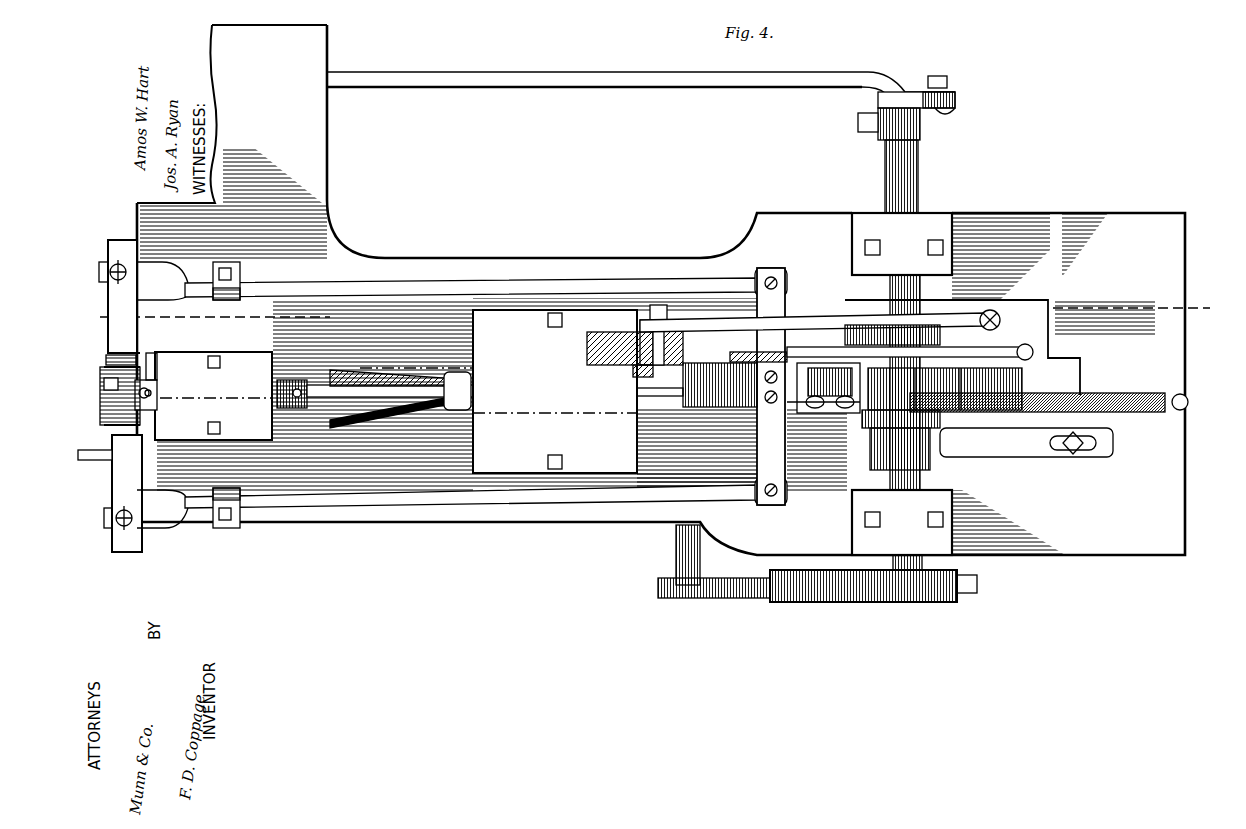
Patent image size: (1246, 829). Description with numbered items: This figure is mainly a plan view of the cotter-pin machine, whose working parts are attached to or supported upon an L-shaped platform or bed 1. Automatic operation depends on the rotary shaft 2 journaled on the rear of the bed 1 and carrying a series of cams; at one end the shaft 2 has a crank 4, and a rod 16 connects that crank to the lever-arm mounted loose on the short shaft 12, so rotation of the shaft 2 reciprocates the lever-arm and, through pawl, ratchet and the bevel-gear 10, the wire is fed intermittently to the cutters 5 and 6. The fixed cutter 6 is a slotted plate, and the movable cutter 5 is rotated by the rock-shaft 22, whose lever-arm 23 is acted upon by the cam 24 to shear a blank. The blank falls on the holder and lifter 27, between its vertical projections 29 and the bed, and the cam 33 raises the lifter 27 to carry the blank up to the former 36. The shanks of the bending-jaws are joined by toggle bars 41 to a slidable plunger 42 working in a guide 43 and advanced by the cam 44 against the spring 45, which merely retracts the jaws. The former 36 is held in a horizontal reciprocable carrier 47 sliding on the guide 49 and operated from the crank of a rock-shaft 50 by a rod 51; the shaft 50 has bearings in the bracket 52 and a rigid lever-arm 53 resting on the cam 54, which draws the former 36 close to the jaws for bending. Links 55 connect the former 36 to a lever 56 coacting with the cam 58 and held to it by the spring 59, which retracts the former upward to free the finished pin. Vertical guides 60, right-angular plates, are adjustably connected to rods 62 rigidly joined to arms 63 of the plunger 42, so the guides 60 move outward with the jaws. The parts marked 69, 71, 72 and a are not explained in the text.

The platform or bed 1 is at (655, 291).
The rotary shaft 2 is at (925, 565).
The crank 4 is at (958, 97).
The movable cutter 5 is at (110, 354).
The fixed cutter 6 is at (104, 358).
The bevel-gear 10 is at (651, 305).
The short shaft 12 is at (925, 185).
The rod 16 is at (572, 82).
The rock-shaft 22 is at (676, 548).
The lever-arm 23 is at (745, 598).
The cam 24 is at (850, 602).
The holder and lifter 27 is at (100, 393).
The vertical projections 29 is at (102, 369).
The cam 33 is at (942, 418).
The former 36 is at (157, 395).
The bars 41 is at (390, 378).
The slidable plunger 42 is at (452, 375).
The guide 43 is at (555, 391).
The cam 44 is at (945, 389).
The spring 45 is at (1130, 394).
The horizontal reciprocable carrier 47 is at (140, 380).
The guide 49 is at (213, 396).
The rock-shaft 50 is at (680, 320).
The rod 51 is at (498, 385).
The bracket 52 is at (586, 353).
The lever-arm 53 is at (805, 325).
The cam 54 is at (930, 305).
The links 55 is at (156, 382).
The lever 56 is at (740, 356).
The cam 58 is at (940, 355).
The spring 59 is at (1002, 324).
The vertical guides 60 is at (120, 396).
The rods 62 is at (630, 290).
The arms 63 is at (770, 455).
The lower arm 69 is at (665, 500).
The lever 71 is at (1018, 445).
The collar 72 is at (880, 460).
The link a is at (826, 425).